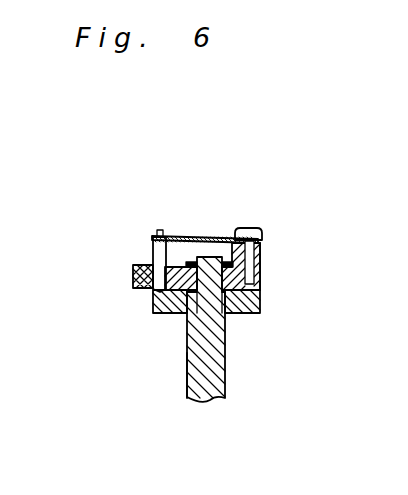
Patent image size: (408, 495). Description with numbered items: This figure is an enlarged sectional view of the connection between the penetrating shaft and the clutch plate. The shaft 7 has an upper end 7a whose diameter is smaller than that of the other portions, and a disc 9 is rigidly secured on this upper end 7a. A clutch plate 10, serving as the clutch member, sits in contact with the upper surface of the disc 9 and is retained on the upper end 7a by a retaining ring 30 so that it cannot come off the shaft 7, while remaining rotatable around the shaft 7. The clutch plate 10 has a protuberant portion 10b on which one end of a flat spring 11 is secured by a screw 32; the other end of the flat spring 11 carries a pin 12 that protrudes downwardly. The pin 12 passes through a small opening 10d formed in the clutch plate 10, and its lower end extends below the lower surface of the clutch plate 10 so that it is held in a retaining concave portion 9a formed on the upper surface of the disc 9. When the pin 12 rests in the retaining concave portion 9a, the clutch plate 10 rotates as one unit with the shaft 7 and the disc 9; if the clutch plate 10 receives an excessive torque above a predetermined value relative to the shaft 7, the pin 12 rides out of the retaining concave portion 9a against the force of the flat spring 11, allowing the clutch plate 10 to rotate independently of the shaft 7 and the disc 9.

The shaft 7 is at (218, 375).
The upper end of the shaft 7a is at (187, 353).
The disc 9 is at (263, 303).
The retaining concave portion 9a is at (160, 315).
The clutch plate 10 is at (263, 273).
The protuberant portion 10b is at (263, 248).
The small opening 10d is at (133, 280).
The flat spring 11 is at (188, 262).
The pin 12 is at (153, 250).
The retaining ring 30 is at (182, 237).
The screw 32 is at (255, 232).